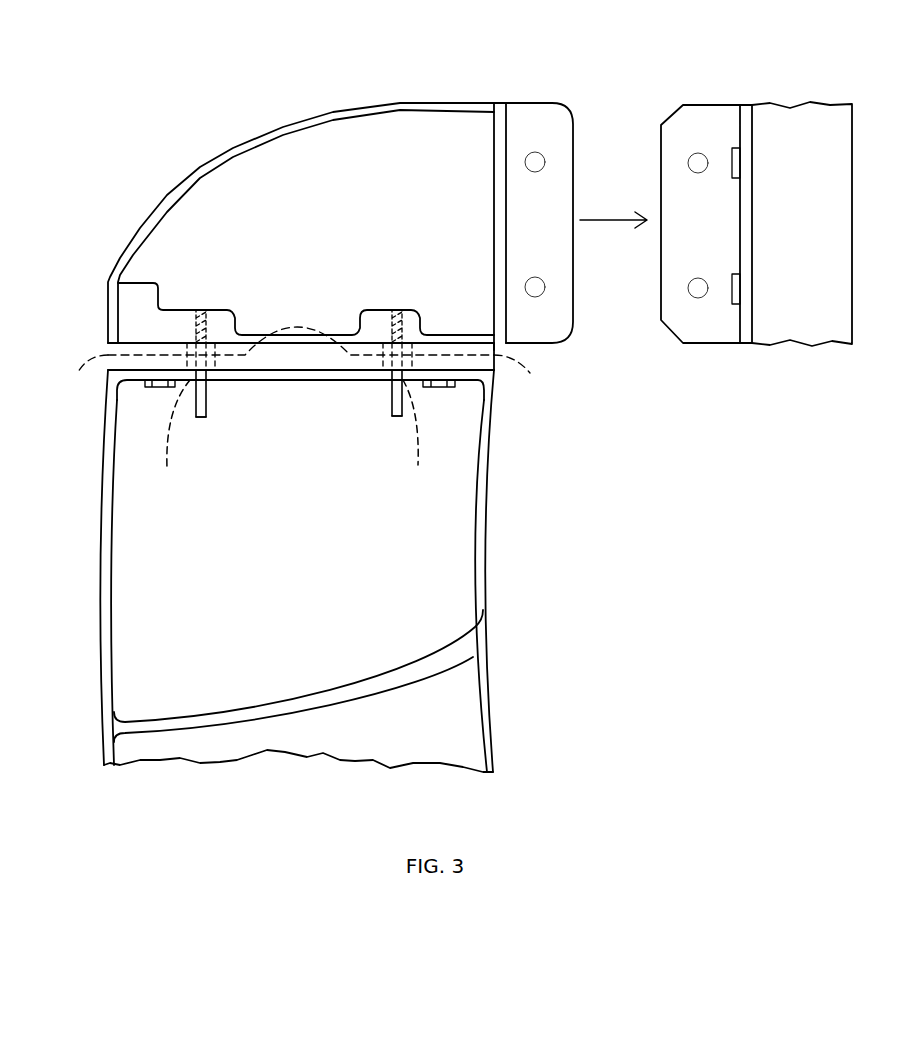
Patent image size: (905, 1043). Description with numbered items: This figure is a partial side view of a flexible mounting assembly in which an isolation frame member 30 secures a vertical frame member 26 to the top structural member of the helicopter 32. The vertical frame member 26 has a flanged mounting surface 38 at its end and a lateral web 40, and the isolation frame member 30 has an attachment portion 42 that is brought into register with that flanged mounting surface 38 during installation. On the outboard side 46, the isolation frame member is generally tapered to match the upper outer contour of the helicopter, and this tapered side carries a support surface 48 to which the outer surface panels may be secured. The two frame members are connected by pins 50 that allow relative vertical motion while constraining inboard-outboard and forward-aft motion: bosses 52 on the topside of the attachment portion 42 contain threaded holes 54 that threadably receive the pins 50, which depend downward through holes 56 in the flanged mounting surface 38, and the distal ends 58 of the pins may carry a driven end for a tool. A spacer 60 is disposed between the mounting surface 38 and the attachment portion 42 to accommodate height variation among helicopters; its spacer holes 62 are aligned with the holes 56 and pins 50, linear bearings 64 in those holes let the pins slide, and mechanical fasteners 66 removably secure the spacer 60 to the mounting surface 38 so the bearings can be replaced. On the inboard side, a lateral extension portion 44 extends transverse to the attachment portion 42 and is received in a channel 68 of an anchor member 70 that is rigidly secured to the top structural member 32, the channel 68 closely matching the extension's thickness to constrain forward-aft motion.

The vertical frame member 26 is at (278, 578).
The isolation frame member 30 is at (348, 216).
The top structural member of the helicopter 32 is at (790, 240).
The flanged mounting surface 38 is at (407, 380).
The lateral web 40 is at (418, 663).
The attachment portion 42 is at (552, 350).
The lateral extension portion 44 is at (538, 88).
The outboard side 46 is at (188, 216).
The support surface 48 is at (283, 143).
The pin 50 is at (199, 421).
The boss 52 is at (200, 308).
The threaded hole 54 is at (208, 310).
The hole 56 is at (292, 437).
The distal end 58 is at (207, 418).
The spacer 60 is at (495, 348).
The spacer hole 62 is at (297, 377).
The linear bearing 64 is at (304, 330).
The mechanical fastener 66 is at (162, 388).
The channel 68 is at (696, 120).
The anchor member 70 is at (748, 103).